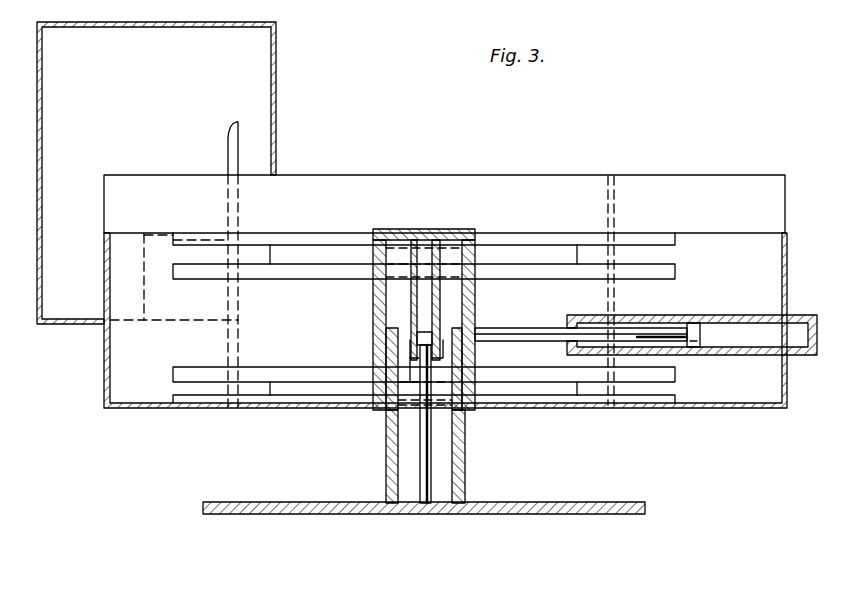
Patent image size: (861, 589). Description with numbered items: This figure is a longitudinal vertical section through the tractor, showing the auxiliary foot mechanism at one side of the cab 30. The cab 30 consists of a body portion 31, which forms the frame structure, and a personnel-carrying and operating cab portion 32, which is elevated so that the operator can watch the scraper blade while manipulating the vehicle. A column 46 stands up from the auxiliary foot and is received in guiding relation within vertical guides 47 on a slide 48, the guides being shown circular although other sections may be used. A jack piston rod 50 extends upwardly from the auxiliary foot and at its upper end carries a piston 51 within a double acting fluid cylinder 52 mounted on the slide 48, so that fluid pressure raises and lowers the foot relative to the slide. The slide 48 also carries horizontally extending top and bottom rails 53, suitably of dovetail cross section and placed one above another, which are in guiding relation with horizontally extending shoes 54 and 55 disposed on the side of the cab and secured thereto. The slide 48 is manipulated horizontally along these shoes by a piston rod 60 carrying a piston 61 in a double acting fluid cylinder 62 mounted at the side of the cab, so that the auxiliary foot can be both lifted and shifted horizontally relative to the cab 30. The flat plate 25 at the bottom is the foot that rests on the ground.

The base plate 25 is at (537, 510).
The cab 30 is at (538, 183).
The body portion 31 is at (714, 184).
The cab portion 32 is at (276, 80).
The column 46 is at (464, 458).
The vertical guides 47 is at (464, 361).
The slide 48 is at (471, 296).
The jack piston rod 50 is at (428, 441).
The piston 51 is at (417, 338).
The double acting fluid cylinder 52 is at (410, 297).
The top and bottom rails 53 is at (556, 252).
The shoe 54 is at (637, 238).
The shoe 55 is at (633, 280).
The piston rod 60 is at (651, 335).
The piston 61 is at (692, 333).
The double acting fluid cylinder 62 is at (753, 352).